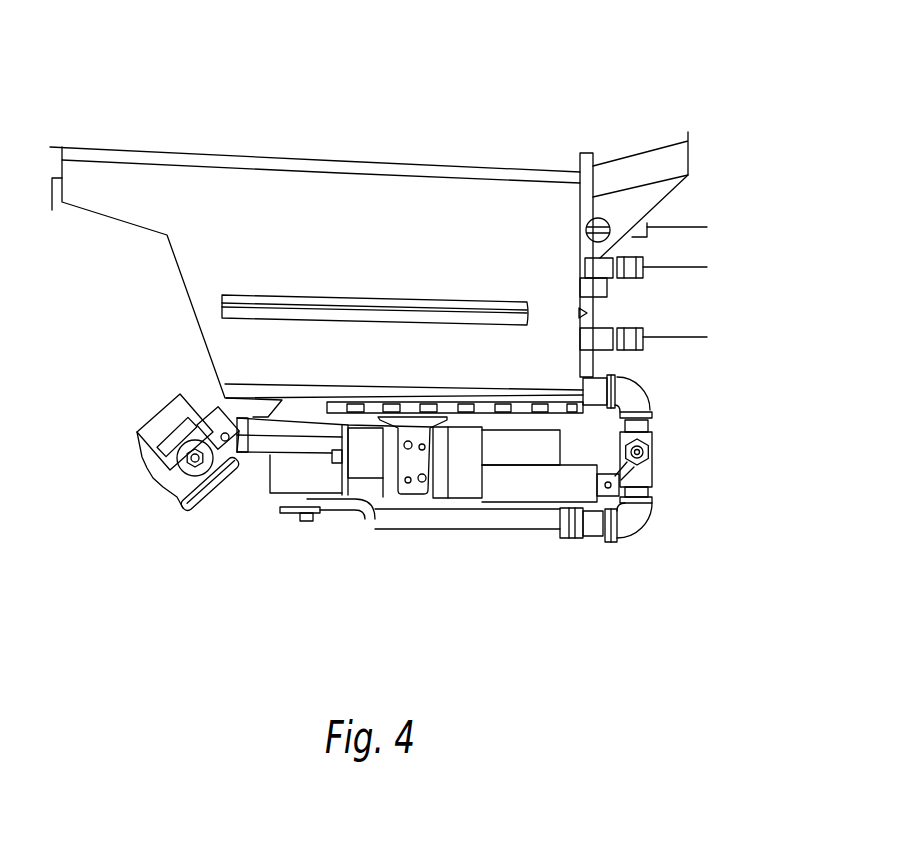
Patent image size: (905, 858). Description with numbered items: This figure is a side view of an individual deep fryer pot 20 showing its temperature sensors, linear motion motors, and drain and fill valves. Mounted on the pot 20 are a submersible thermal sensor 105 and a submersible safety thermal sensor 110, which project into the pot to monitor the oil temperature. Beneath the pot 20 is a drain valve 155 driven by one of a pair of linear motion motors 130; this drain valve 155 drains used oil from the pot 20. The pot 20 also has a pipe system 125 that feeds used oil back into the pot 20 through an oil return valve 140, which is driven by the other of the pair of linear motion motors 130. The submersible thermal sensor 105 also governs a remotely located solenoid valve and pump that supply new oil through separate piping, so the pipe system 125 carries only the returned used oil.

The deep fryer pot 20 is at (468, 88).
The submersible thermal sensor 105 is at (643, 330).
The submersible safety thermal sensor 110 is at (643, 260).
The pipe system 125 is at (533, 522).
The linear motion motors 130 is at (518, 483).
The oil return valve 140 is at (650, 450).
The drain valve 155 is at (133, 445).